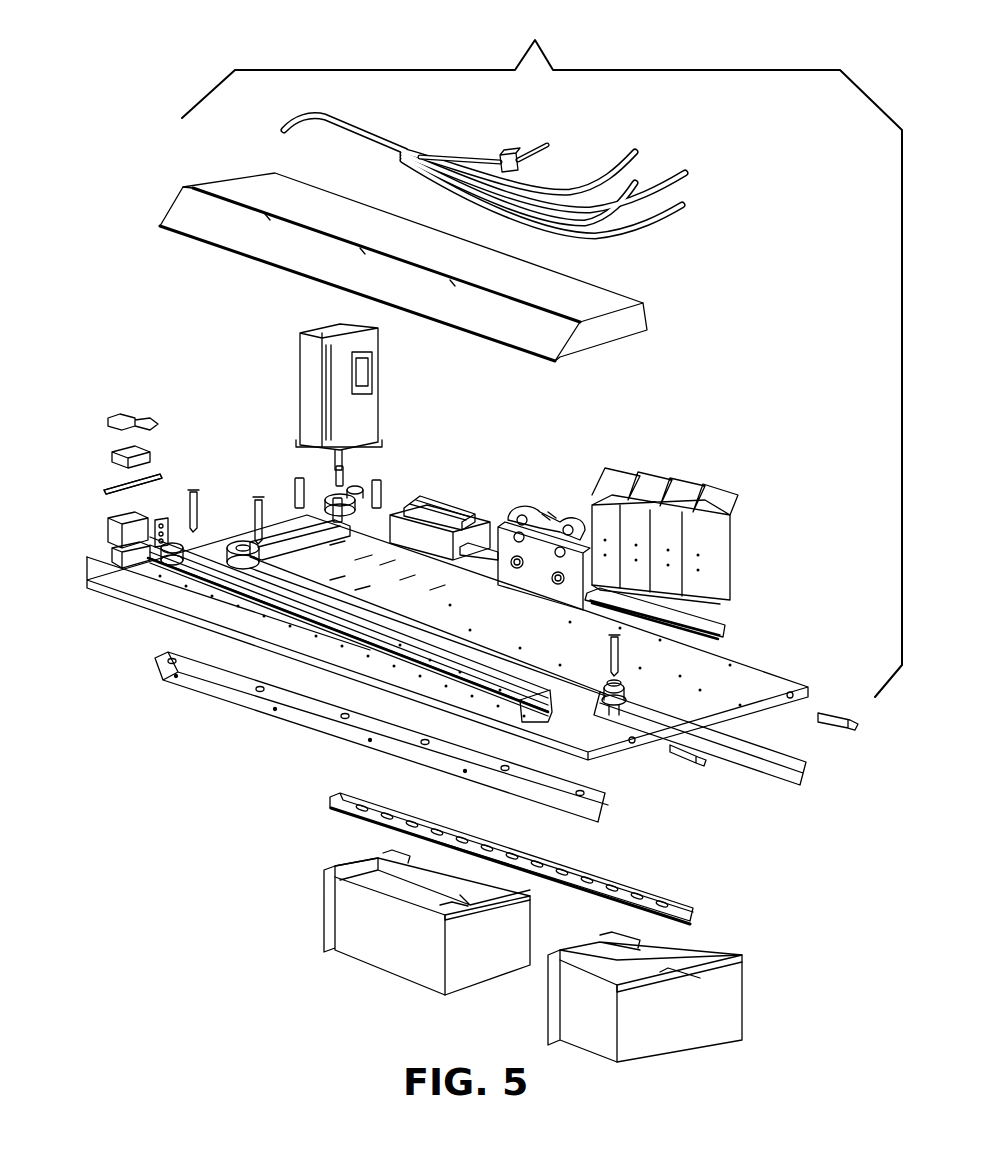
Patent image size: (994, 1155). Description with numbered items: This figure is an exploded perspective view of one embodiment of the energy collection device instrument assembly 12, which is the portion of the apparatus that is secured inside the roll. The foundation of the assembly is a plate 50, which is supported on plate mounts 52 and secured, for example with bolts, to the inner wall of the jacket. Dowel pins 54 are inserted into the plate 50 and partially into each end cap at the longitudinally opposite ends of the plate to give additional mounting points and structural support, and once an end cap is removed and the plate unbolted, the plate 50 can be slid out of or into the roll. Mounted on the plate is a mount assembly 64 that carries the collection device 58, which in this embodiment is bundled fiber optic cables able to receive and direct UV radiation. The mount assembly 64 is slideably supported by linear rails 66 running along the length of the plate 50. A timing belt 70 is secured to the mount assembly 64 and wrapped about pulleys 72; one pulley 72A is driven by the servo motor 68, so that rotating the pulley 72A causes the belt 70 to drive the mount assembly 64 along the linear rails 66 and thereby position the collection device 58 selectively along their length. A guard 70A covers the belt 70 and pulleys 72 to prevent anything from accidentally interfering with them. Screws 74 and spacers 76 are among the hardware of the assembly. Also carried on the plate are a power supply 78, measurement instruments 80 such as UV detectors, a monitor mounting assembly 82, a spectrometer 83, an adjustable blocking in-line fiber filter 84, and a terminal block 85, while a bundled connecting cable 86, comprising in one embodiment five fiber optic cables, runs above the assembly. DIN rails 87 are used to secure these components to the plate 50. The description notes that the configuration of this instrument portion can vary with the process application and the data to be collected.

The instrument assembly 12 is at (542, 354).
The plate 50 is at (752, 690).
The plate mounts 52 is at (614, 820).
The dowel pins 54 is at (842, 726).
The collection device 58 is at (142, 478).
The mount assembly 64 is at (98, 412).
The linear rails 66 is at (125, 565).
The servo motor 68 is at (310, 378).
The timing belt 70 is at (297, 540).
The guard 70A is at (592, 306).
The pulleys 72 is at (358, 486).
The driven pulley 72A is at (350, 497).
The screws 74 is at (256, 505).
The spacers 76 is at (335, 498).
The power supply 78 is at (508, 940).
The measurement instruments 80 is at (640, 458).
The monitor mounting assembly 82 is at (548, 510).
The spectrometer 83 is at (692, 946).
The adjustable blocking in-line fiber filter 84 is at (514, 155).
The terminal block 85 is at (486, 515).
The bundled connecting cable 86 is at (398, 148).
The DIN rails 87 is at (672, 900).